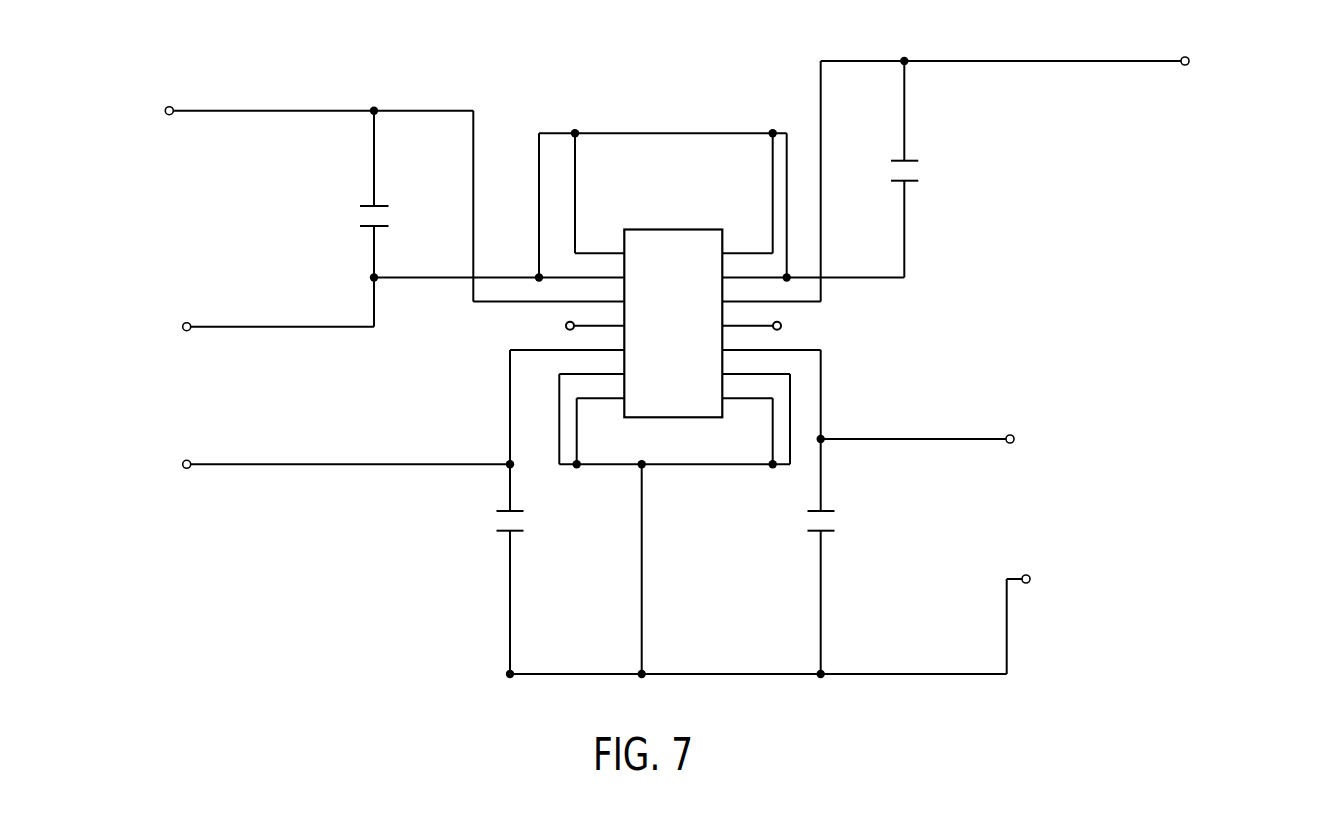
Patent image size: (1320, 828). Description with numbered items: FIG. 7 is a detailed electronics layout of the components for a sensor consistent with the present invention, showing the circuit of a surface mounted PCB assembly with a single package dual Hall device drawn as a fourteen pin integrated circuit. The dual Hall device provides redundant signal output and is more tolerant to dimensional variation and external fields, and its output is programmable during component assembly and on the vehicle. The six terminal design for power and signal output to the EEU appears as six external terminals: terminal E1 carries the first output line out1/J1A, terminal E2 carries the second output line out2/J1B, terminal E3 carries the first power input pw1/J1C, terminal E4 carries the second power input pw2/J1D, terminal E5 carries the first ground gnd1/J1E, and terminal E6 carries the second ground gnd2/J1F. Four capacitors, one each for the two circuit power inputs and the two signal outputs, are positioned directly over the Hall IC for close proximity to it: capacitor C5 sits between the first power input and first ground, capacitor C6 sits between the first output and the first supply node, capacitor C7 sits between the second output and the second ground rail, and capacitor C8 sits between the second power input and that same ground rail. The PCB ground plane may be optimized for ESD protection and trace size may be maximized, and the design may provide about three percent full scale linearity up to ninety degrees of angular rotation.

The terminal out1/J1A E1 is at (1053, 37).
The terminal out2/J1B E2 is at (329, 446).
The terminal pw1/J1C E3 is at (310, 79).
The terminal pw2/J1D E4 is at (964, 415).
The terminal gnd1/J1E E5 is at (258, 295).
The terminal gnd2/J1F E6 is at (1053, 601).
The capacitor C5 is at (386, 219).
The capacitor C6 is at (916, 169).
The capacitor C7 is at (496, 575).
The capacitor C8 is at (809, 575).